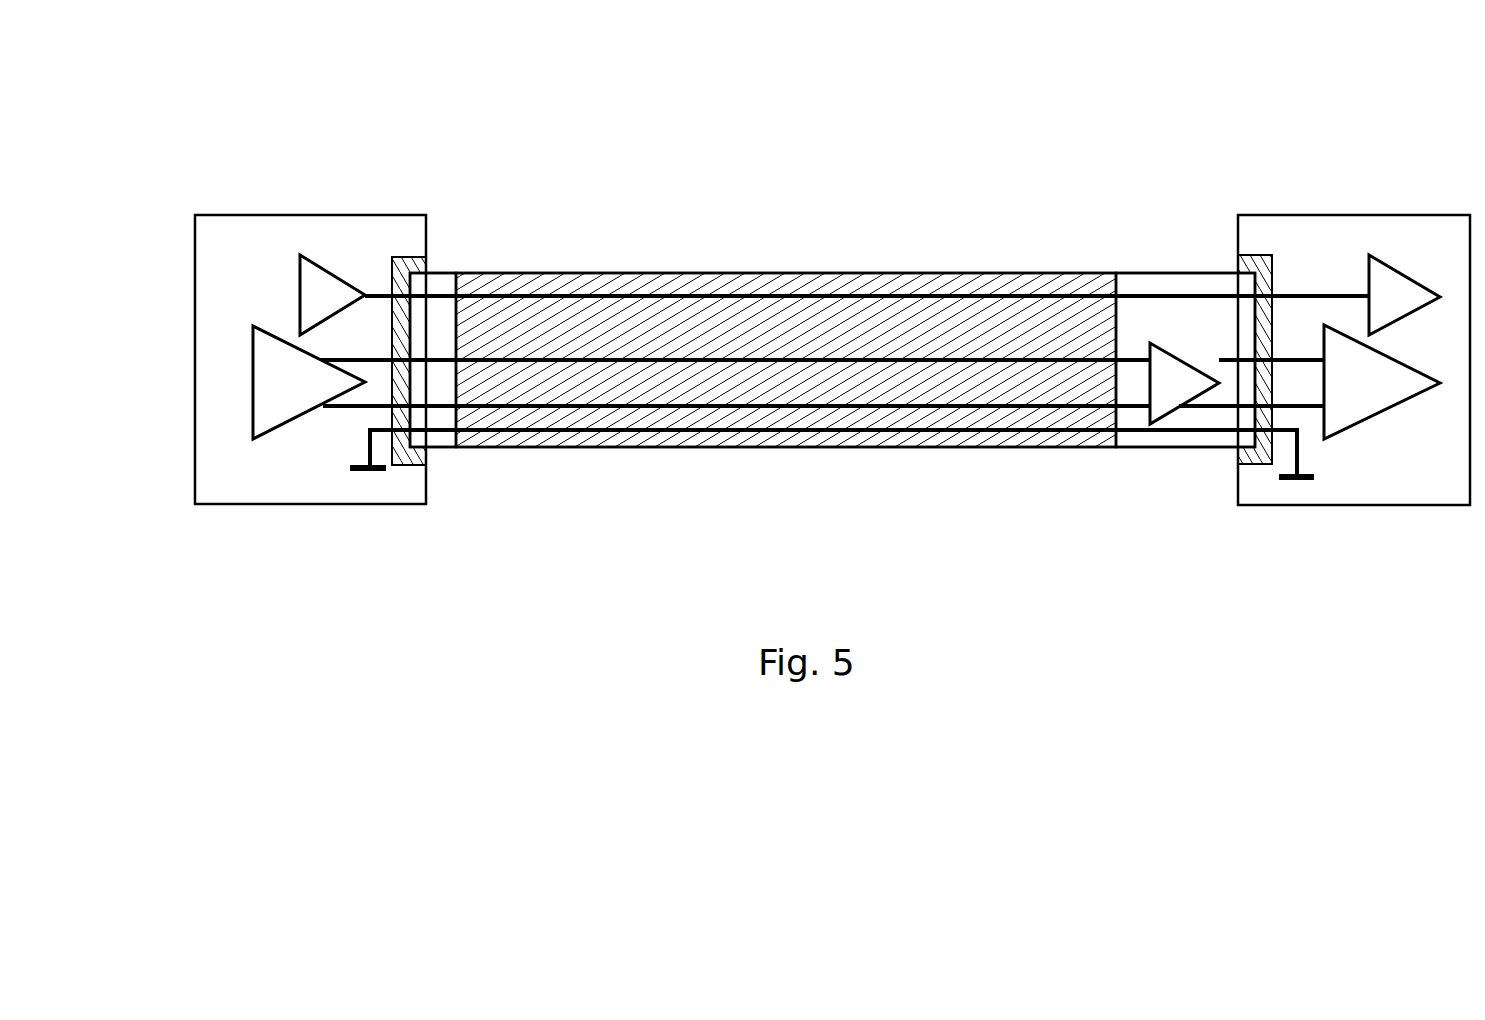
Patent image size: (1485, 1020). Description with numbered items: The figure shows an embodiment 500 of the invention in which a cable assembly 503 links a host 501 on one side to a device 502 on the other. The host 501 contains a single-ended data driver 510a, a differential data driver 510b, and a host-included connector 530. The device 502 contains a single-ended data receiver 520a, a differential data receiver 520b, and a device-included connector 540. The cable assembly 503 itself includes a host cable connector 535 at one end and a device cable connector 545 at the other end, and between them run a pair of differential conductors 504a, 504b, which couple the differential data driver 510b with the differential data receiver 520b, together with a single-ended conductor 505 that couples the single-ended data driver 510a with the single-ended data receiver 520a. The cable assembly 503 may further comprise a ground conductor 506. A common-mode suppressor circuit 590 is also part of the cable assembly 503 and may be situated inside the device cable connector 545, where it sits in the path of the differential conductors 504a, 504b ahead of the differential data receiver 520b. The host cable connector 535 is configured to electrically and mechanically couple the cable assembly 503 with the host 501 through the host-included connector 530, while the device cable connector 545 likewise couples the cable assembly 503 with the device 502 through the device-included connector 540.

The embodiment 500 is at (195, 98).
The host 501 is at (252, 500).
The device 502 is at (1458, 500).
The cable assembly 503 is at (598, 272).
The differential conductor 504a is at (565, 360).
The differential conductor 504b is at (682, 406).
The single-ended conductor 505 is at (838, 288).
The ground conductor 506 is at (795, 435).
The single-ended data driver 510a is at (305, 295).
The differential data driver 510b is at (263, 388).
The single-ended data receiver 520a is at (1378, 267).
The differential data receiver 520b is at (1340, 365).
The host-included connector 530 is at (408, 258).
The host cable connector 535 is at (440, 285).
The device-included connector 540 is at (1262, 453).
The device cable connector 545 is at (1190, 440).
The common-mode suppressor circuit 590 is at (1190, 388).